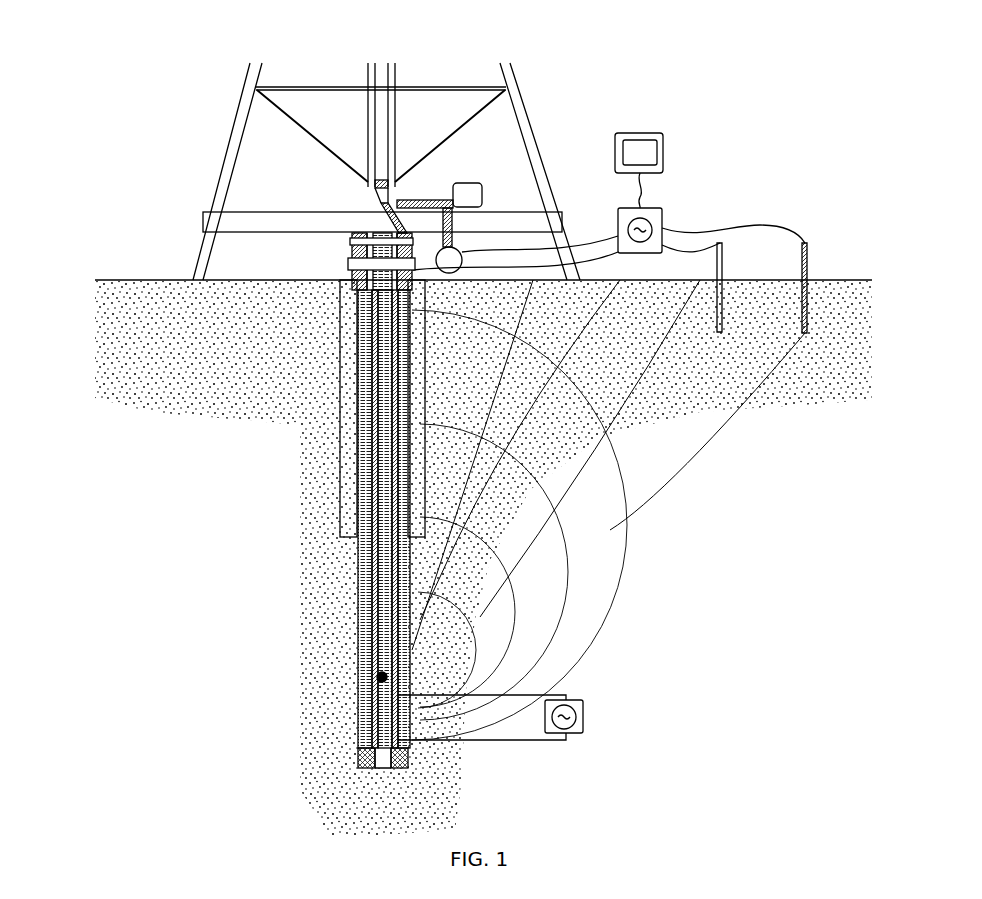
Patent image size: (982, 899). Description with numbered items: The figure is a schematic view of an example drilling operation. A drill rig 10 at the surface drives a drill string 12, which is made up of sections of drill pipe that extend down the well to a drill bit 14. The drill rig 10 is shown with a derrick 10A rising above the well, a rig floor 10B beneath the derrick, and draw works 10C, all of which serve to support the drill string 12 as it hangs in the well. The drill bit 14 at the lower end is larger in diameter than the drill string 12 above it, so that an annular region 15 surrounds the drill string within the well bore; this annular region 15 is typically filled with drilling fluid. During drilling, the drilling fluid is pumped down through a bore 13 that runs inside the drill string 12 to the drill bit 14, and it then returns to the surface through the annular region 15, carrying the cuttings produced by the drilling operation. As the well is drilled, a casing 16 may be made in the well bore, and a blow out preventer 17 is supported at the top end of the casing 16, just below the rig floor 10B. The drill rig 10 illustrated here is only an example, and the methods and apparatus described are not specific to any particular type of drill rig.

The drill rig 10 is at (126, 114).
The derrick 10A is at (522, 100).
The rig floor 10B is at (203, 221).
The draw works 10C is at (380, 201).
The drill string 12 is at (358, 591).
The bore 13 is at (382, 441).
The drill bit 14 is at (358, 760).
The annular region 15 is at (358, 548).
The casing 16 is at (340, 481).
The blow out preventer 17 is at (352, 249).